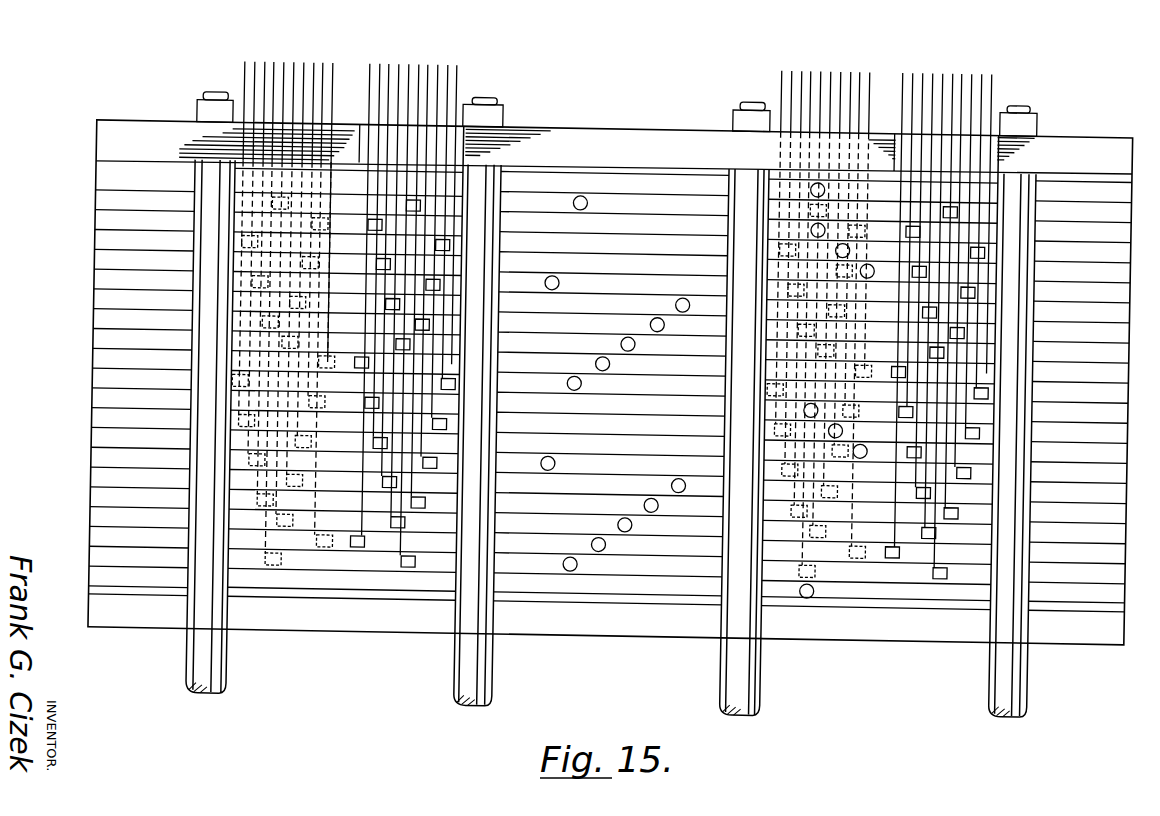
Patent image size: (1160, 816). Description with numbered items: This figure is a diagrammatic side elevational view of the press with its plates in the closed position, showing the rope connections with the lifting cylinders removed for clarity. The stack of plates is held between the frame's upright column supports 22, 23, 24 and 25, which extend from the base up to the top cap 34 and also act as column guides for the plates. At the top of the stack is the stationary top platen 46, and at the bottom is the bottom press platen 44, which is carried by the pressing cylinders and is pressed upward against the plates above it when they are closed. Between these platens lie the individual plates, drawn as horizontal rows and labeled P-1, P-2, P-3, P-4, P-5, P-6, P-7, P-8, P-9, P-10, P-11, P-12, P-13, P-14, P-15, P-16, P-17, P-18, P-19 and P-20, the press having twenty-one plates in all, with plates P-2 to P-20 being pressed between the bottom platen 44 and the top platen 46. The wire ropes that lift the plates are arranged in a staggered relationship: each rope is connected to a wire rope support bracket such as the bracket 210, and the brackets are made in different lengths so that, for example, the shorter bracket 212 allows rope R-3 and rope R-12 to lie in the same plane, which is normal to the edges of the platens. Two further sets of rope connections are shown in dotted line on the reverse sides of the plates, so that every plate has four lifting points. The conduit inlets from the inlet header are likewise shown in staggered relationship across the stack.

The column support 22 is at (227, 688).
The column support 23 is at (452, 683).
The column support 24 is at (722, 680).
The column support 25 is at (990, 684).
The top cap 34 is at (683, 110).
The bottom press platen 44 is at (610, 625).
The top platen 46 is at (593, 182).
The wire rope support bracket 210 is at (363, 548).
The wire rope support bracket 212 is at (373, 365).
The rope R-3 is at (358, 520).
The rope R-12 is at (369, 85).
The plate P-1 is at (1092, 593).
The plate P-2 is at (96, 556).
The plate P-3 is at (96, 537).
The plate P-4 is at (96, 517).
The plate P-5 is at (96, 498).
The plate P-6 is at (96, 479).
The plate P-7 is at (96, 461).
The plate P-8 is at (96, 441).
The plate P-9 is at (96, 420).
The plate P-10 is at (96, 400).
The plate P-11 is at (96, 380).
The plate P-12 is at (96, 360).
The plate P-13 is at (96, 340).
The plate P-14 is at (96, 318).
The plate P-15 is at (96, 297).
The plate P-16 is at (96, 278).
The plate P-17 is at (96, 258).
The plate P-18 is at (96, 238).
The plate P-19 is at (96, 216).
The plate P-20 is at (96, 200).